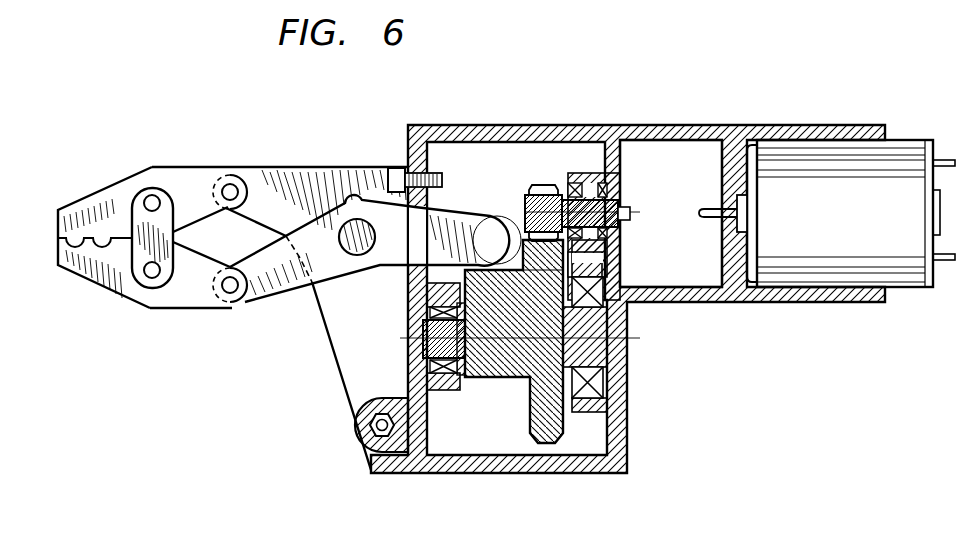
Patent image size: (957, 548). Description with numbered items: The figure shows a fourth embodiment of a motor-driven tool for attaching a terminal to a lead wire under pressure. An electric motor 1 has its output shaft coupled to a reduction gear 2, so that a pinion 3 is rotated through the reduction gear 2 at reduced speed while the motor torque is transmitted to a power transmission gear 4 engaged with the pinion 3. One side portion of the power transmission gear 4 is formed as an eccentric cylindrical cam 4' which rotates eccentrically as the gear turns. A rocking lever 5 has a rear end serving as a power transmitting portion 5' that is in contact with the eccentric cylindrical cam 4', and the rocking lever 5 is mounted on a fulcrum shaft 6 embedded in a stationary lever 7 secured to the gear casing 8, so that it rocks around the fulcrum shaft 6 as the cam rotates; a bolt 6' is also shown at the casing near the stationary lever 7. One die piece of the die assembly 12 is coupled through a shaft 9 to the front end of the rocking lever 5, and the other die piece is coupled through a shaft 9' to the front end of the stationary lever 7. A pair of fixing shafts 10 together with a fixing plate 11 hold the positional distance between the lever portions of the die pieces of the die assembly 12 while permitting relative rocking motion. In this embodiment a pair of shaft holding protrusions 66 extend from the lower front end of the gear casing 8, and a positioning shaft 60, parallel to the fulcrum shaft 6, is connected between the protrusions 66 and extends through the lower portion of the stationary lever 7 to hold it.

The electric motor 1 is at (825, 187).
The reduction gear 2 is at (668, 180).
The pinion 3 is at (543, 192).
The power transmission gear 4 is at (514, 342).
The eccentric cylindrical cam 4' is at (517, 329).
The rocking lever 5 is at (375, 212).
The power transmitting portion 5' is at (497, 215).
The fulcrum shaft 6 is at (357, 191).
The bolt 6' is at (411, 142).
The stationary lever 7 is at (296, 200).
The gear casing 8 is at (590, 465).
The shaft 9 is at (230, 305).
The shaft 9' is at (230, 164).
The fixing shafts 10 is at (152, 200).
The fixing plate 11 is at (133, 213).
The die assembly 12 is at (84, 197).
The positioning shaft 60 is at (368, 425).
The shaft holding protrusions 66 is at (387, 450).